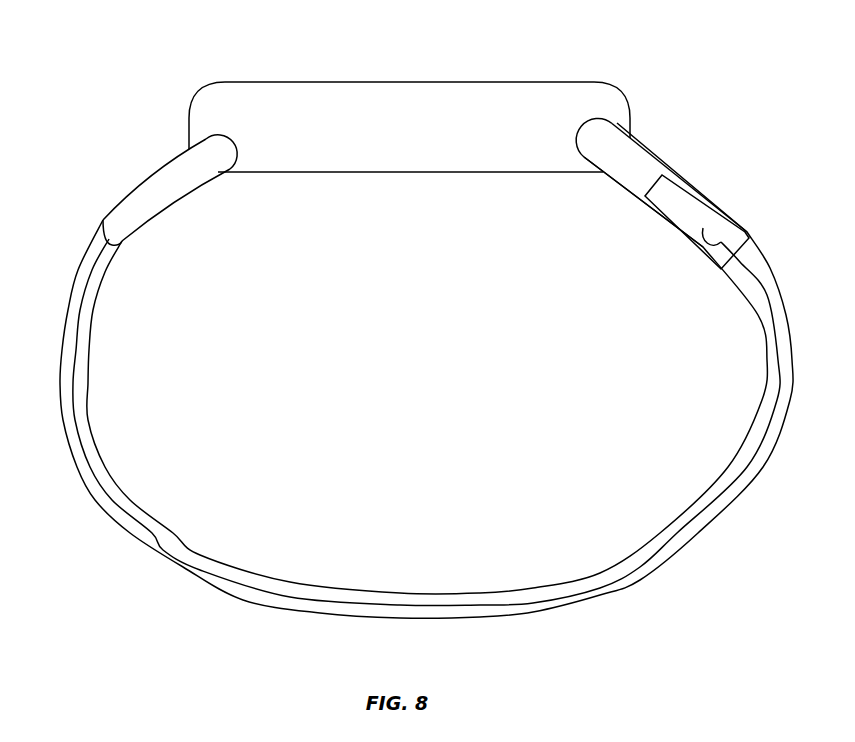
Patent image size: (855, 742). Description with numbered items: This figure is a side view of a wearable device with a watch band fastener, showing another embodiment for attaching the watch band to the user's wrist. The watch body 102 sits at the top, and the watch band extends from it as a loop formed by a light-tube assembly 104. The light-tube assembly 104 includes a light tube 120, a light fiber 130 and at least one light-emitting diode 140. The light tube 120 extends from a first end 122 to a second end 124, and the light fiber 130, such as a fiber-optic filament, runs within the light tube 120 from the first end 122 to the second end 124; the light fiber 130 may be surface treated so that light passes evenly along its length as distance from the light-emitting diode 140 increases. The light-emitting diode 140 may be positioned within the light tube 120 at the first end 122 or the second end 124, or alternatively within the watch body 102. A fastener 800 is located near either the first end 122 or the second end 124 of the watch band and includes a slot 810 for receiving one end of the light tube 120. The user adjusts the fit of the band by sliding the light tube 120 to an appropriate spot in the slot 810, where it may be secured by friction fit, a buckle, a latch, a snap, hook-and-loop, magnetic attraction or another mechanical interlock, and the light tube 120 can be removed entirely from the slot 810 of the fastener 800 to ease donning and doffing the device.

The watch body 102 is at (388, 102).
The light-tube assembly 104 is at (77, 226).
The light tube 120 is at (769, 267).
The first end 122 is at (102, 222).
The second end 124 is at (711, 226).
The light fiber 130 is at (766, 376).
The light-emitting diode 140 is at (114, 245).
The fastener 800 is at (598, 150).
The slot 810 is at (673, 196).